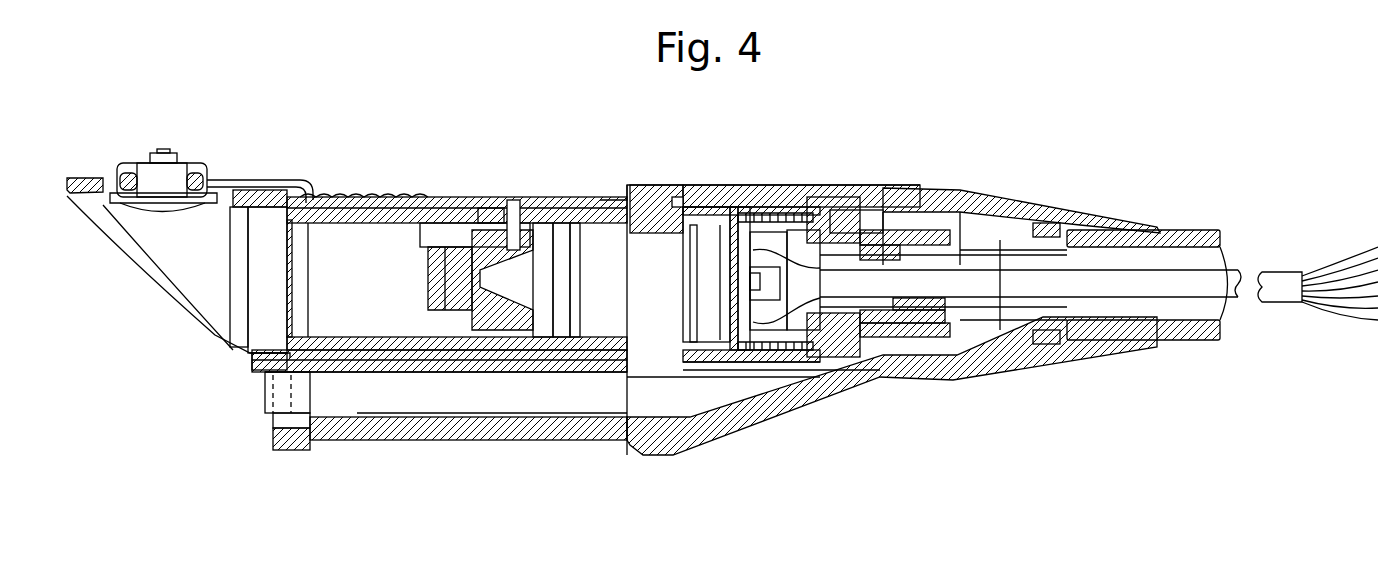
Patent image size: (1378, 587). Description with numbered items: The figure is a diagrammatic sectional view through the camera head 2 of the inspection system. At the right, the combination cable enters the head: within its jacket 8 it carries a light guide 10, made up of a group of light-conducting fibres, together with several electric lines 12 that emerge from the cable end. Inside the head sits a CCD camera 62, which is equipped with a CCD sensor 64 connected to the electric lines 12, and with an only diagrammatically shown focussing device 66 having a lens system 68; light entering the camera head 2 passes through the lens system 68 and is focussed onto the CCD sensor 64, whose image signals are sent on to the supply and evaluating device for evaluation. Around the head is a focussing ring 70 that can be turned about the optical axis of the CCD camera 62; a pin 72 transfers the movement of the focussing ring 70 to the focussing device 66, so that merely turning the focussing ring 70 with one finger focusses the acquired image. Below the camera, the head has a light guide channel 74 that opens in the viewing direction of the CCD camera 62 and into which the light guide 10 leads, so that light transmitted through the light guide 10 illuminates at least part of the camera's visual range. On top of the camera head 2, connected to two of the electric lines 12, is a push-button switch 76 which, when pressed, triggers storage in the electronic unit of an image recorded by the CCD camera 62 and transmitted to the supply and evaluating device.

The camera head 2 is at (699, 180).
The jacket 8 is at (1179, 222).
The light guide 10 is at (1215, 255).
The electric lines 12 is at (1322, 262).
The CCD camera 62 is at (647, 210).
The CCD sensor 64 is at (718, 235).
The focussing device 66 is at (492, 210).
The lens system 68 is at (422, 255).
The focussing ring 70 is at (540, 207).
The pin 72 is at (512, 210).
The light guide channel 74 is at (352, 415).
The push-button switch 76 is at (160, 180).